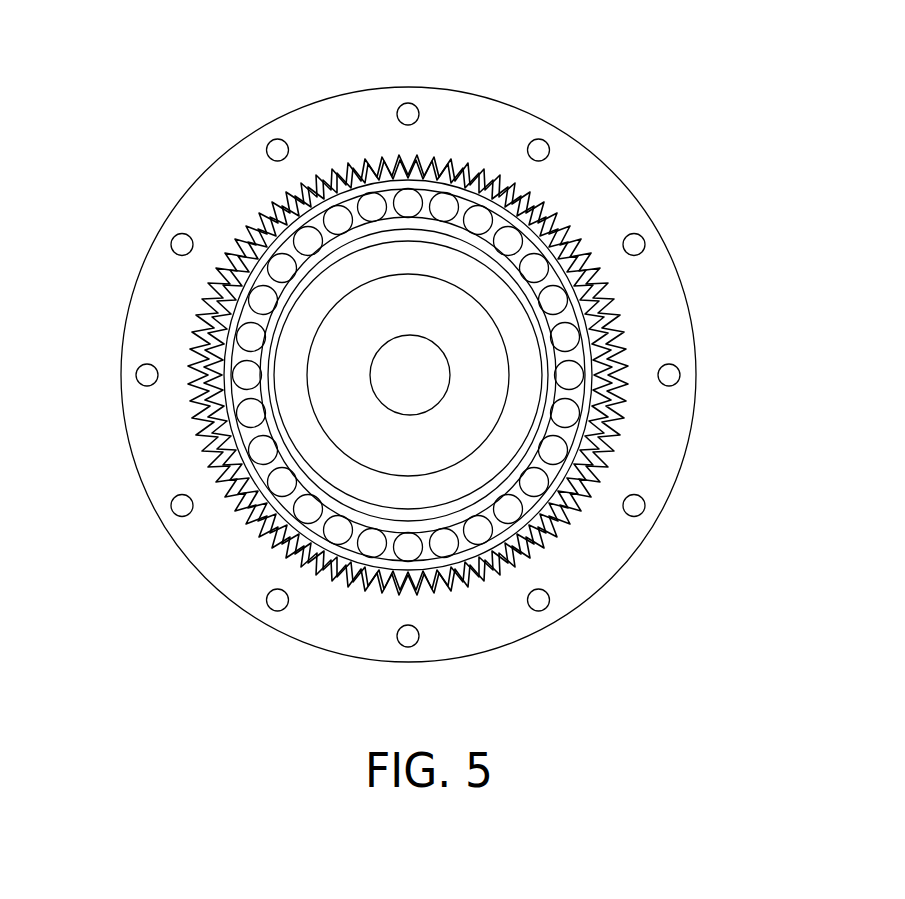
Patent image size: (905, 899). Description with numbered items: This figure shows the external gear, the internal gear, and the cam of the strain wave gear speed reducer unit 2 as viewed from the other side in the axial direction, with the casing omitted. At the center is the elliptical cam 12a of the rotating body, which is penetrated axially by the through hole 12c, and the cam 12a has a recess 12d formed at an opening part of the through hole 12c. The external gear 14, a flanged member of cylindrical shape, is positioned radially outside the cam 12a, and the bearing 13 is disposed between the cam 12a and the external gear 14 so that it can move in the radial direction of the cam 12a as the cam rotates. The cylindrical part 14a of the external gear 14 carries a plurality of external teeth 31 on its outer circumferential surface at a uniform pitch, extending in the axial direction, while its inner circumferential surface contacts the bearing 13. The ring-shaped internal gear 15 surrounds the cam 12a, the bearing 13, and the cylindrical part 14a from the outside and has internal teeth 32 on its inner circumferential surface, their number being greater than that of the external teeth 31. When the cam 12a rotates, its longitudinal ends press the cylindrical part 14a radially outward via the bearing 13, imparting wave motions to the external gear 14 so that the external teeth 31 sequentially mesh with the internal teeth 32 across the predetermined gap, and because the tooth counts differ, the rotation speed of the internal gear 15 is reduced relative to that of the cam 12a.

The strain wave gear speed reducer unit 2 is at (684, 98).
The cam 12a is at (290, 328).
The through hole 12c is at (450, 376).
The recess 12d is at (503, 406).
The bearing 13 is at (580, 422).
The external gear 14 is at (498, 297).
The cylindrical part 14a is at (613, 391).
The internal gear 15 is at (148, 443).
The external teeth 31 is at (418, 375).
The internal teeth 32 is at (242, 512).